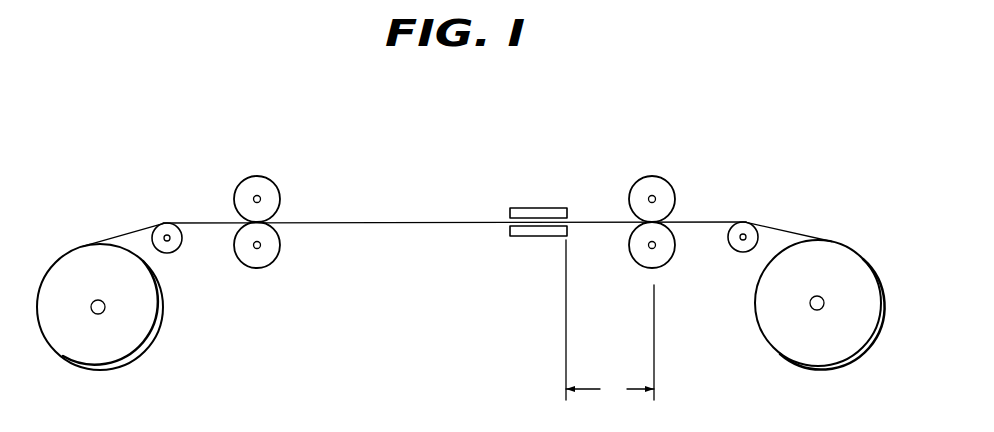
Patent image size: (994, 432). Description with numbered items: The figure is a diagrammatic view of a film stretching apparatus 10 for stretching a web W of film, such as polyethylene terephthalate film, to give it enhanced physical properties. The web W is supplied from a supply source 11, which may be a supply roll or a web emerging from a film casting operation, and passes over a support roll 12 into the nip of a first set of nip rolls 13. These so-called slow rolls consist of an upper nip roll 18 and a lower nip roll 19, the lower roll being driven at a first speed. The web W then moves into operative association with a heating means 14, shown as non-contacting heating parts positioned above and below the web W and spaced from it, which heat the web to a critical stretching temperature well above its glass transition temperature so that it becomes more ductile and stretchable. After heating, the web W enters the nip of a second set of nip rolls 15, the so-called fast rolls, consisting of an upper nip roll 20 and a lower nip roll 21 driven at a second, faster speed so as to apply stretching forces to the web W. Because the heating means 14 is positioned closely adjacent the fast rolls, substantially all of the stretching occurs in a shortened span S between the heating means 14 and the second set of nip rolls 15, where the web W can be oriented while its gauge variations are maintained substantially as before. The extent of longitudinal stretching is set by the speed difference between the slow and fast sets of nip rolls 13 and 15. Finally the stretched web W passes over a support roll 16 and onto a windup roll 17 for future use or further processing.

The stretching apparatus 10 is at (372, 130).
The web W is at (133, 225).
The supply source 11 is at (88, 343).
The support roll 12 is at (173, 250).
The first set of nip rolls 13 is at (295, 173).
The heating means 14 is at (568, 213).
The second set of nip rolls 15 is at (681, 174).
The support roll 16 is at (740, 251).
The windup roll 17 is at (807, 343).
The upper nip roll 18 is at (281, 198).
The lower nip roll 19 is at (276, 254).
The upper nip roll 20 is at (660, 192).
The lower nip roll 21 is at (667, 257).
The shortened span S is at (610, 322).